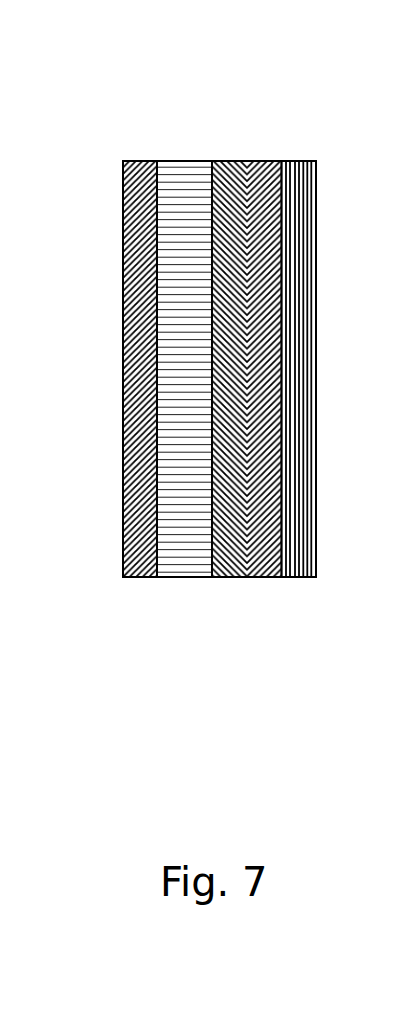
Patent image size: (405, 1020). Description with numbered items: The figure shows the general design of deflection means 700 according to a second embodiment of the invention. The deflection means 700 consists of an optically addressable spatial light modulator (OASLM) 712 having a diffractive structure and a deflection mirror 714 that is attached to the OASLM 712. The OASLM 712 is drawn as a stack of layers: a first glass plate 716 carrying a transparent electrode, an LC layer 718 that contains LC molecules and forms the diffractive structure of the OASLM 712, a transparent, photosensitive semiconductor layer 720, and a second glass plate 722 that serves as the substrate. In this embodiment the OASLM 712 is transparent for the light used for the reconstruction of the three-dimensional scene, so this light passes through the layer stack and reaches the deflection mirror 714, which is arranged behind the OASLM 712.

The deflection means 700 is at (219, 296).
The optically addressable spatial light modulator 712 is at (194, 338).
The deflection mirror 714 is at (297, 577).
The first glass plate 716 is at (127, 577).
The LC layer 718 is at (175, 577).
The transparent photosensitive semiconductor layer 720 is at (227, 577).
The second glass plate 722 is at (275, 577).